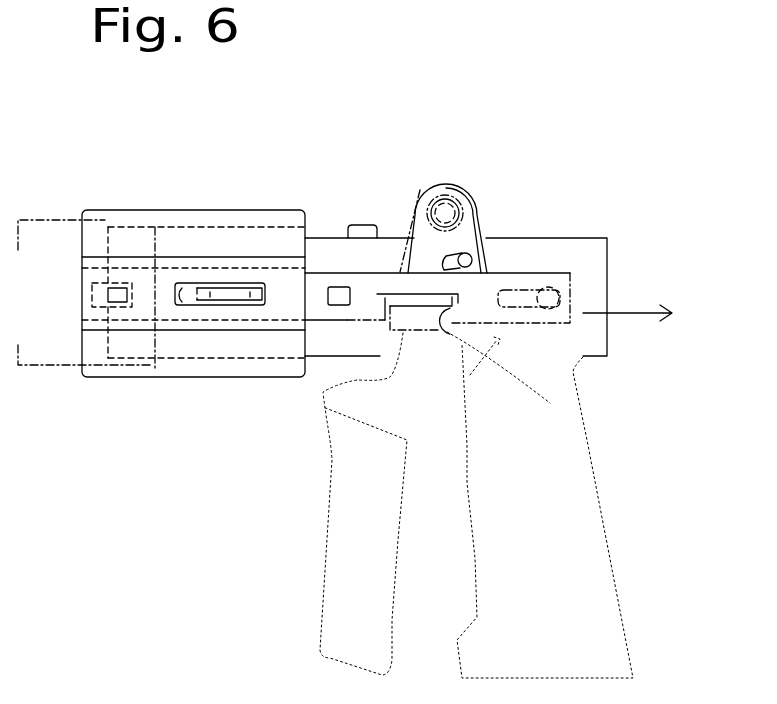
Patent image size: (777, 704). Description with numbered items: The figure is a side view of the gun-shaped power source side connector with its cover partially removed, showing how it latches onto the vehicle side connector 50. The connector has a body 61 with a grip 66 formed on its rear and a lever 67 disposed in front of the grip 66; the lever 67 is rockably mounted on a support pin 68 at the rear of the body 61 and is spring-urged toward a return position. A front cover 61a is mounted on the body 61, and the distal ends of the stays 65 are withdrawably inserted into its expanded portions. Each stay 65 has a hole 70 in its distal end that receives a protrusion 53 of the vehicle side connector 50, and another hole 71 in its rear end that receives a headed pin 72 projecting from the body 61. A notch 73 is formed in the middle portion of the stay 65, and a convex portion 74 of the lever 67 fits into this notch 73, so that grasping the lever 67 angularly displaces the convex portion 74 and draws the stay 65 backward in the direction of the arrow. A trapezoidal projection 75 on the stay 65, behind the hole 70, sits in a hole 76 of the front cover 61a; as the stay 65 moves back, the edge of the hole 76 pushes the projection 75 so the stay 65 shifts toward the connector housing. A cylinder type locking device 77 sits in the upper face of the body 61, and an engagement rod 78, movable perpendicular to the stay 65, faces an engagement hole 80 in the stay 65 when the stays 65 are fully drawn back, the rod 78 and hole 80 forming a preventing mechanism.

The vehicle side connector 50 is at (28, 366).
The protrusions 53 is at (108, 294).
The body 61 is at (596, 248).
The front cover 61a is at (222, 212).
The stays 65 is at (558, 323).
The grip 66 is at (597, 588).
The lever 67 is at (332, 622).
The support pin 68 is at (452, 213).
The hole 70 is at (100, 288).
The hole 71 is at (536, 300).
The headed pins 72 is at (556, 295).
The notch 73 is at (497, 327).
The convex portions 74 is at (447, 327).
The trapezoidal projection 75 is at (227, 294).
The holes 76 is at (182, 294).
The locking device 77 is at (362, 224).
The engagement rod 78 is at (358, 295).
The engagement hole 80 is at (335, 287).